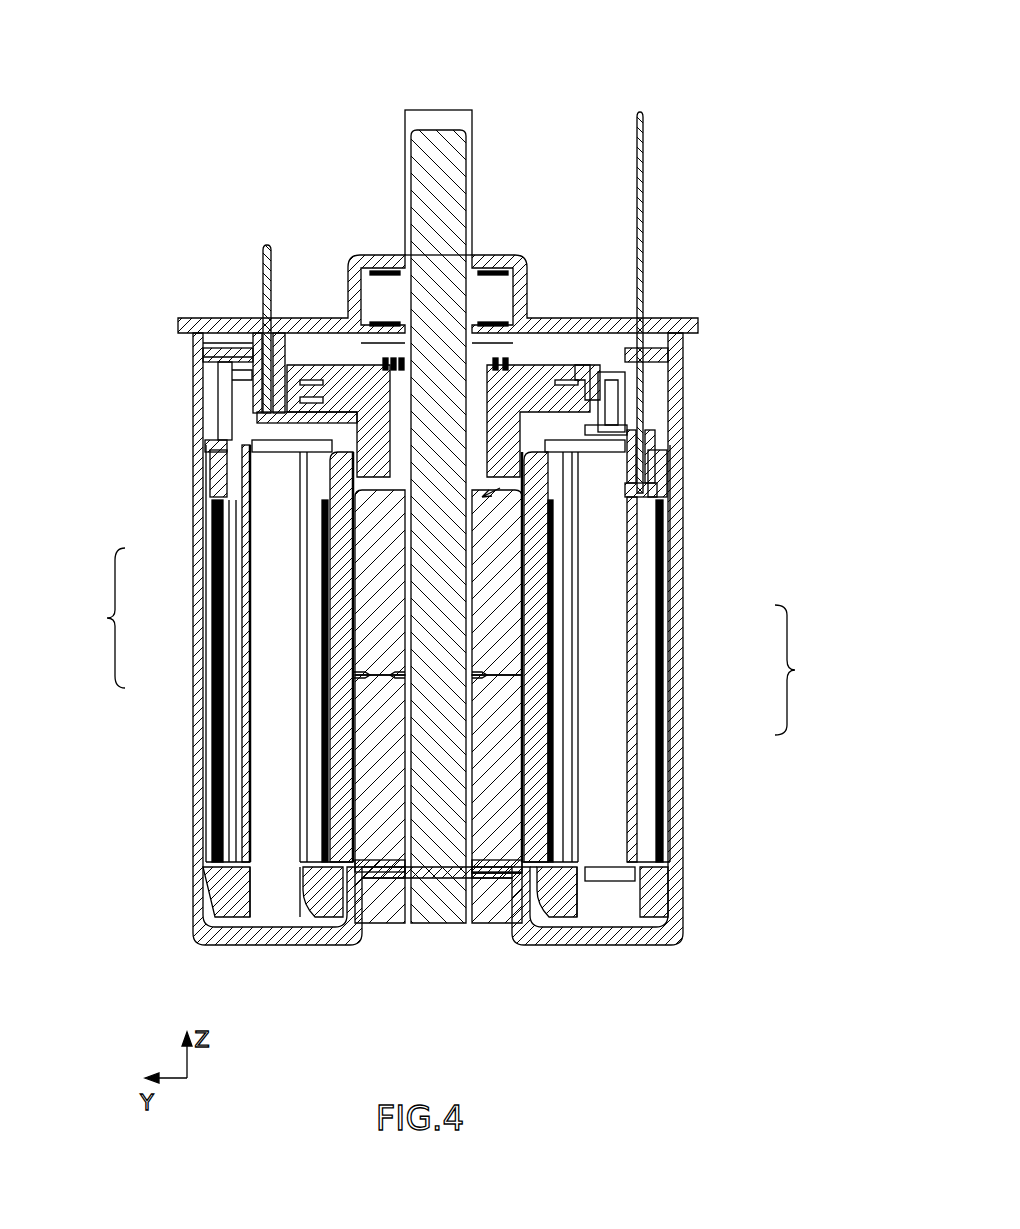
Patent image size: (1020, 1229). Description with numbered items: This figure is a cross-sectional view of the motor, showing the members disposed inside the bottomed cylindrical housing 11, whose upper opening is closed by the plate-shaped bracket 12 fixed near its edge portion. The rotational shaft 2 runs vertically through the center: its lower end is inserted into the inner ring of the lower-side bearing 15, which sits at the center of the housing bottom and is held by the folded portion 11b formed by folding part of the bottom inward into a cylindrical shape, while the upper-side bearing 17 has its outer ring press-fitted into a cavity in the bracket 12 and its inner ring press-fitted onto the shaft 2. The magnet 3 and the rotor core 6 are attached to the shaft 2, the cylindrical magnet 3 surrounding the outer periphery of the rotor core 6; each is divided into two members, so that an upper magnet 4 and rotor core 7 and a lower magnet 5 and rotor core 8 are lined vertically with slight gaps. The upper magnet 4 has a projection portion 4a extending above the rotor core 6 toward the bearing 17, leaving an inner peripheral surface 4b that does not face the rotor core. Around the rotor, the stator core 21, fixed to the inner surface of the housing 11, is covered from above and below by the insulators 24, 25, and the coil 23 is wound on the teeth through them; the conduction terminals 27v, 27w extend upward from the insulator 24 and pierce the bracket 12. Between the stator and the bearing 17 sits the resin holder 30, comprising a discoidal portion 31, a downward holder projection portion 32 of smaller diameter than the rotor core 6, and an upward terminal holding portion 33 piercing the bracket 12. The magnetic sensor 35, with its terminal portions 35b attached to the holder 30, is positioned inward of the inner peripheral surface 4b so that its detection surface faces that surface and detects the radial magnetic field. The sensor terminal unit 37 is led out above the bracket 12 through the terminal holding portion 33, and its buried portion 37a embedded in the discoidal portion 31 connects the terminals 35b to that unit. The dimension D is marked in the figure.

The rotational shaft 2 is at (455, 155).
The magnet 3 is at (388, 642).
The magnet 4 is at (340, 558).
The projection portion 4a is at (285, 468).
The inner peripheral surface 4b is at (330, 515).
The magnet 5 is at (343, 723).
The rotor core 6 is at (574, 706).
The rotor core 7 is at (500, 597).
The rotor core 8 is at (500, 750).
The housing 11 is at (190, 822).
The folded portion 11b is at (383, 908).
The bracket 12 is at (325, 328).
The bearing 15 is at (483, 903).
The bearing 17 is at (405, 320).
The stator core 21 is at (568, 770).
The coil 23 is at (610, 870).
The insulator 24 is at (647, 480).
The insulator 25 is at (563, 887).
The conduction terminal 27v is at (420, 110).
The conduction terminal 27w is at (641, 180).
The holder 30 is at (693, 318).
The discoidal portion 31 is at (600, 397).
The holder projection portion 32 is at (232, 382).
The terminal holding portion 33 is at (252, 333).
The magnetic sensor 35 is at (593, 432).
The terminal portion 35b is at (487, 380).
The sensor terminal unit 37 is at (263, 248).
The buried portion 37a is at (537, 385).
The gap distance D is at (500, 488).